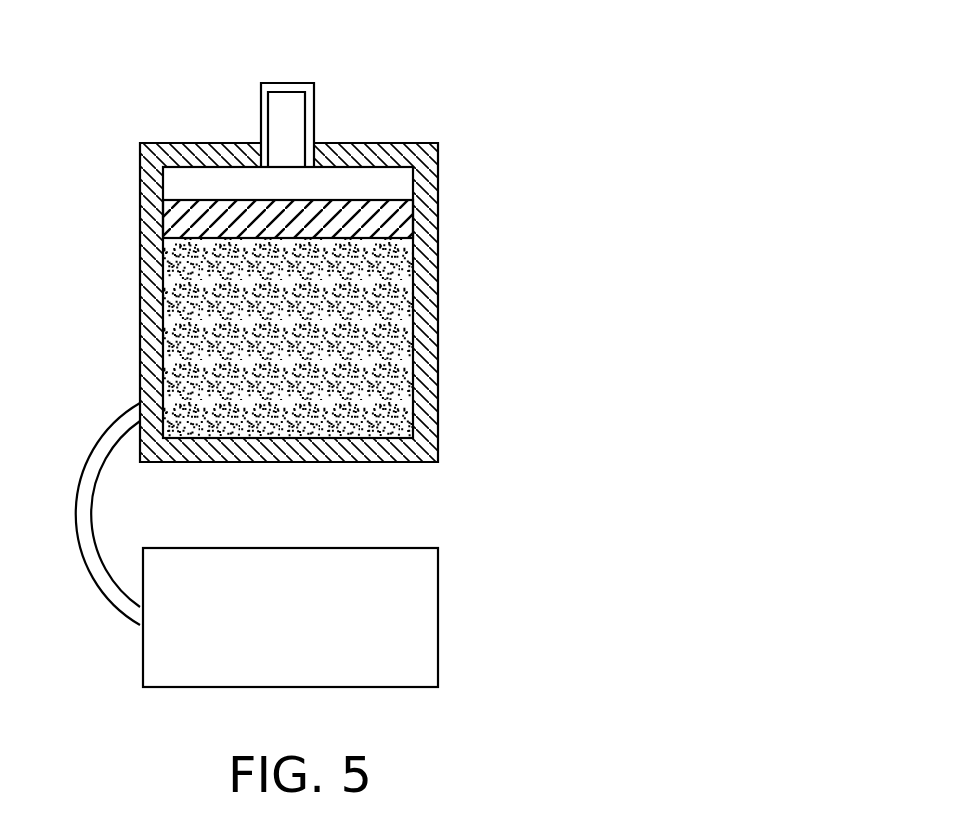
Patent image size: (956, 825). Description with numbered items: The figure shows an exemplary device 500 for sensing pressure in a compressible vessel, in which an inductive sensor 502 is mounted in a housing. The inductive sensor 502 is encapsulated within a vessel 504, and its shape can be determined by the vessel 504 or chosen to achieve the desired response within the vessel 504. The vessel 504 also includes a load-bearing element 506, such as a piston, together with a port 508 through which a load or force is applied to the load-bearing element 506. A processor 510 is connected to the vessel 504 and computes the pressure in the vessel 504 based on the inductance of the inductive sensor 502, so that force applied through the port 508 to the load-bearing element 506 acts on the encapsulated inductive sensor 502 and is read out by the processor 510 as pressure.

The device 500 is at (103, 112).
The inductive sensor 502 is at (402, 343).
The vessel 504 is at (423, 432).
The load-bearing element 506 is at (404, 223).
The port 508 is at (318, 103).
The processor 510 is at (438, 611).